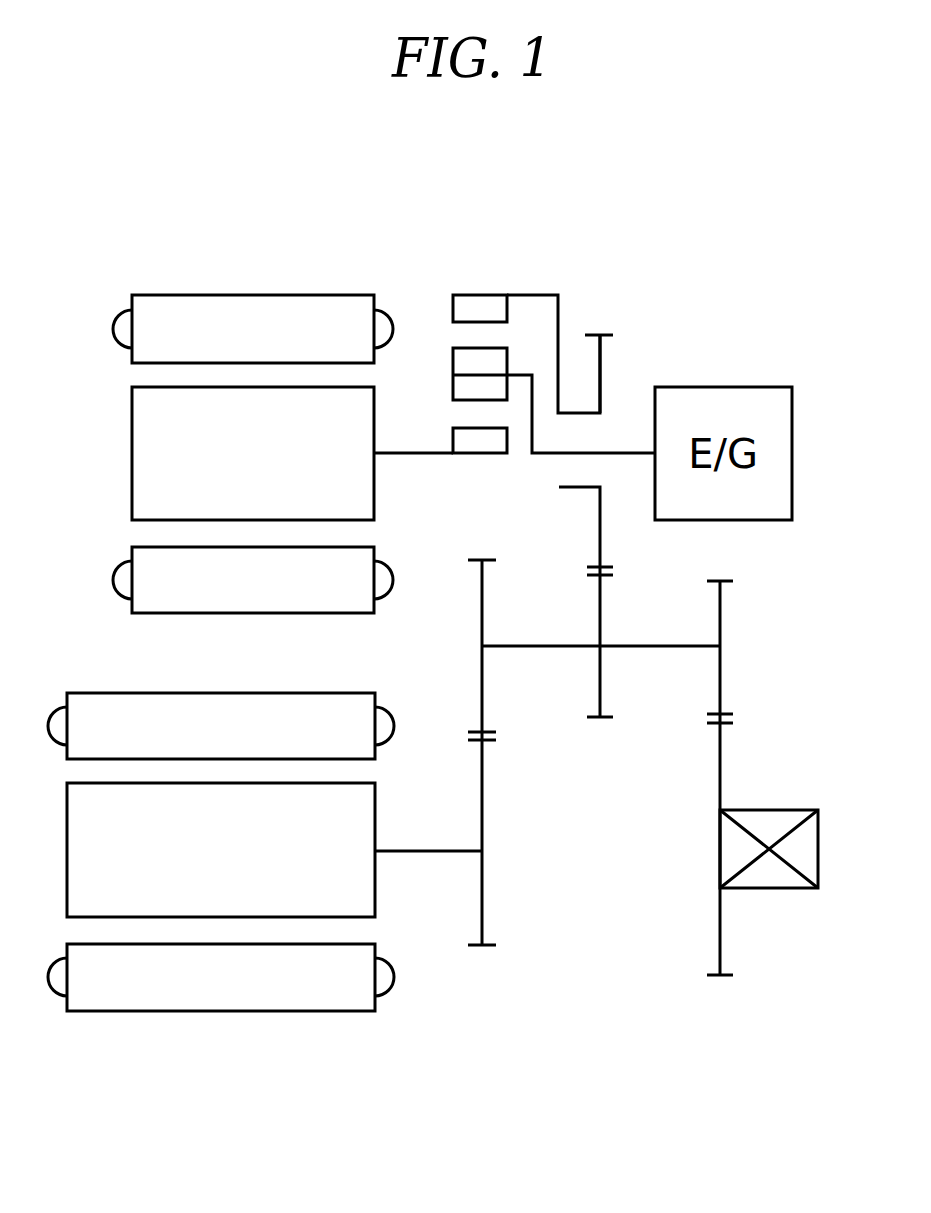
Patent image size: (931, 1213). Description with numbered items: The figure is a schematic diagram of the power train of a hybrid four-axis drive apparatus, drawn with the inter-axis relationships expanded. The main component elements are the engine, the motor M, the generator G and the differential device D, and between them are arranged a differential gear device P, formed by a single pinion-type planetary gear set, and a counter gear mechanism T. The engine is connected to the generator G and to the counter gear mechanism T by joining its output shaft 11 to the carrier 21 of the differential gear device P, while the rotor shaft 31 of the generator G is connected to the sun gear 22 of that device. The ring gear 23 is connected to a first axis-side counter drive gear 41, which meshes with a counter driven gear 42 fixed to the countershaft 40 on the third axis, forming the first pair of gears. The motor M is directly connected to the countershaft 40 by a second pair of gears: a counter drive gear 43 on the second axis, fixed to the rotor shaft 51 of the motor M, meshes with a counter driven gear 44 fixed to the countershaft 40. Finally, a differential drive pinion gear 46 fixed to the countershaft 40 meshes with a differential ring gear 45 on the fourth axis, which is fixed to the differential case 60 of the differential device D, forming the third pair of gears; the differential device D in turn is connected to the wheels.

The output shaft 11 is at (612, 452).
The carrier 21 is at (520, 370).
The sun gear 22 is at (477, 448).
The ring gear 23 is at (492, 302).
The rotor shaft 31 is at (415, 455).
The countershaft 40 is at (562, 644).
The counter drive gear 41 is at (602, 368).
The counter driven gear 42 is at (603, 597).
The counter drive gear 43 is at (483, 777).
The counter driven gear 44 is at (480, 617).
The differential ring gear 45 is at (718, 770).
The differential drive pinion gear 46 is at (722, 615).
The rotor shaft 51 is at (435, 850).
The differential case 60 is at (770, 888).
The generator G is at (260, 287).
The motor M is at (132, 677).
The differential gear device P is at (501, 369).
The counter gear mechanism T is at (604, 731).
The differential device D is at (769, 834).